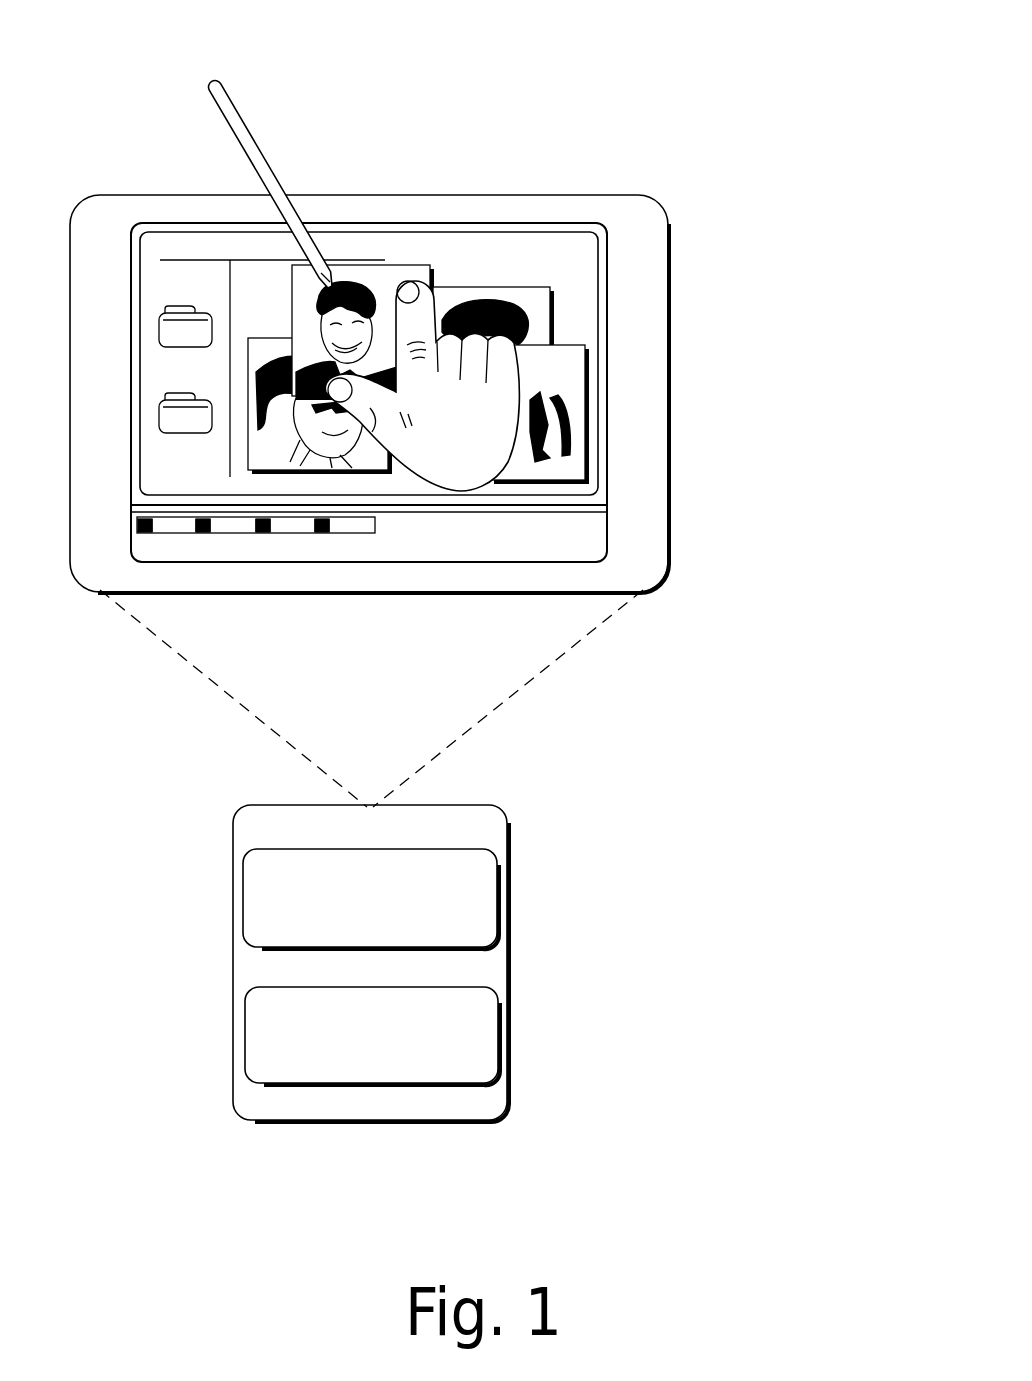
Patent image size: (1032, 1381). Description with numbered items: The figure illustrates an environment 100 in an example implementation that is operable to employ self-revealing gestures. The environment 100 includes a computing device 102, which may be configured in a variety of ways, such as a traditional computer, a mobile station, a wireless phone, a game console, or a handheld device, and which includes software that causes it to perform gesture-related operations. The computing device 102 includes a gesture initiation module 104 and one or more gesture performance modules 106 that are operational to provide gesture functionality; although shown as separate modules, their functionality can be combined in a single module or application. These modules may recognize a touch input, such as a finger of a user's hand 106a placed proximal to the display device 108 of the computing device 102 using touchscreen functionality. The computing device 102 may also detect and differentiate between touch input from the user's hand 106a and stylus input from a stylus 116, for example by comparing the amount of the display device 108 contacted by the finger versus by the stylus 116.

The environment 100 is at (772, 64).
The computing device 102 is at (484, 838).
The gesture initiation module 104 is at (352, 933).
The gesture performance module 106 is at (353, 1071).
The user's hand 106a is at (485, 473).
The display device 108 is at (581, 260).
The stylus 116 is at (218, 78).